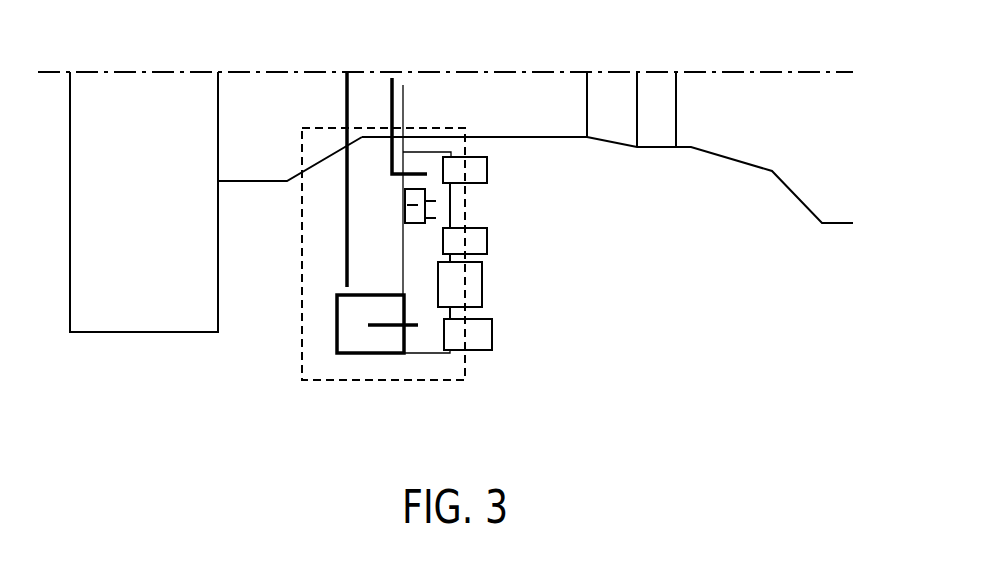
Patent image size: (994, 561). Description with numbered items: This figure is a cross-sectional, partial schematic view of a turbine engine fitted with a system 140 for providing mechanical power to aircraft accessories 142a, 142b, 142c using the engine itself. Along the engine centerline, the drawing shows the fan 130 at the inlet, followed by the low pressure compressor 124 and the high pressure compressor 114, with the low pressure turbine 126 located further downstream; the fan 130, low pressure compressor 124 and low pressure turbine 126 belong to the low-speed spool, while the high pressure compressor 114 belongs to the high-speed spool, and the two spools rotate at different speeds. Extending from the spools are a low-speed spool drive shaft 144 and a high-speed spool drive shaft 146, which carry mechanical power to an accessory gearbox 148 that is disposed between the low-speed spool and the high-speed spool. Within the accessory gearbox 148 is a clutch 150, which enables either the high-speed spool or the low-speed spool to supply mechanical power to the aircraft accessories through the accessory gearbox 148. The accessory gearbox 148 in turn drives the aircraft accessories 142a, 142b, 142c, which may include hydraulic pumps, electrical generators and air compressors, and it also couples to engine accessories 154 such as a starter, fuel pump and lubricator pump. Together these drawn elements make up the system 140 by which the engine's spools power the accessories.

The high pressure compressor 114 is at (534, 123).
The low pressure compressor 124 is at (262, 121).
The low pressure turbine 126 is at (817, 141).
The fan 130 is at (157, 198).
The system 140 is at (298, 362).
The aircraft accessory 142a is at (492, 335).
The aircraft accessory 142b is at (487, 240).
The aircraft accessory 142c is at (482, 285).
The low-speed spool drive shaft 144 is at (343, 96).
The high-speed spool drive shaft 146 is at (398, 93).
The accessory gearbox 148 is at (430, 352).
The clutch 150 is at (405, 206).
The engine accessories 154 is at (487, 170).